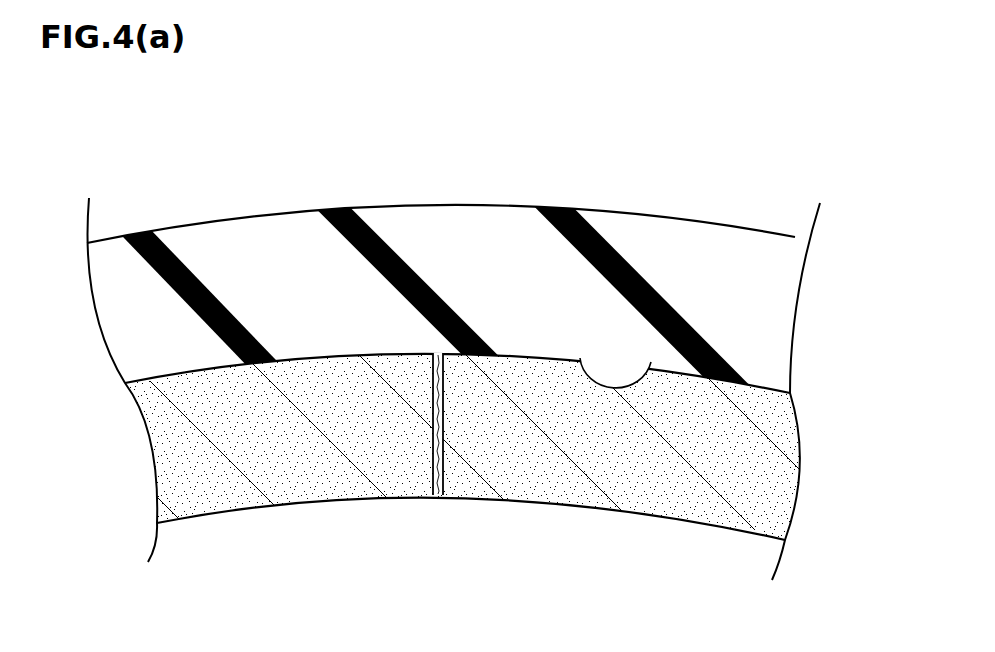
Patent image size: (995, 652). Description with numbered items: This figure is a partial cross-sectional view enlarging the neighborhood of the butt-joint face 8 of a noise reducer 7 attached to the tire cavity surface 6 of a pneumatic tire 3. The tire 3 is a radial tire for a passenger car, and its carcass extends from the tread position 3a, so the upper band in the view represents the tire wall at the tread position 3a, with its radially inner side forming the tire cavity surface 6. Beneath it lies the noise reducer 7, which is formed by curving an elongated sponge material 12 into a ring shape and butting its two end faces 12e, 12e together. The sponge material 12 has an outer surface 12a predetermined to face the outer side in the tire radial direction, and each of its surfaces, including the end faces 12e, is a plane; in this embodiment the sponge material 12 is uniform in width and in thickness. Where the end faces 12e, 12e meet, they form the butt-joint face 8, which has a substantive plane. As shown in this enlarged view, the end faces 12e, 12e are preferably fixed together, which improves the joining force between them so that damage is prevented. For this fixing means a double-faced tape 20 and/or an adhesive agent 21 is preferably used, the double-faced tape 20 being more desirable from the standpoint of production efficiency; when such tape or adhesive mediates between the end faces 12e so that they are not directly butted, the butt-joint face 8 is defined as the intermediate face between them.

The pneumatic tire 3 is at (457, 312).
The tread position 3a is at (720, 226).
The tire cavity surface 6 is at (651, 362).
The noise reducer 7 is at (467, 373).
The sponge material 12 is at (467, 368).
The outer surface 12a is at (206, 371).
The end faces 12e is at (433, 428).
The double-faced tape 20 is at (453, 368).
The adhesive agent 21 is at (450, 485).
The butt-joint face 8 is at (435, 462).